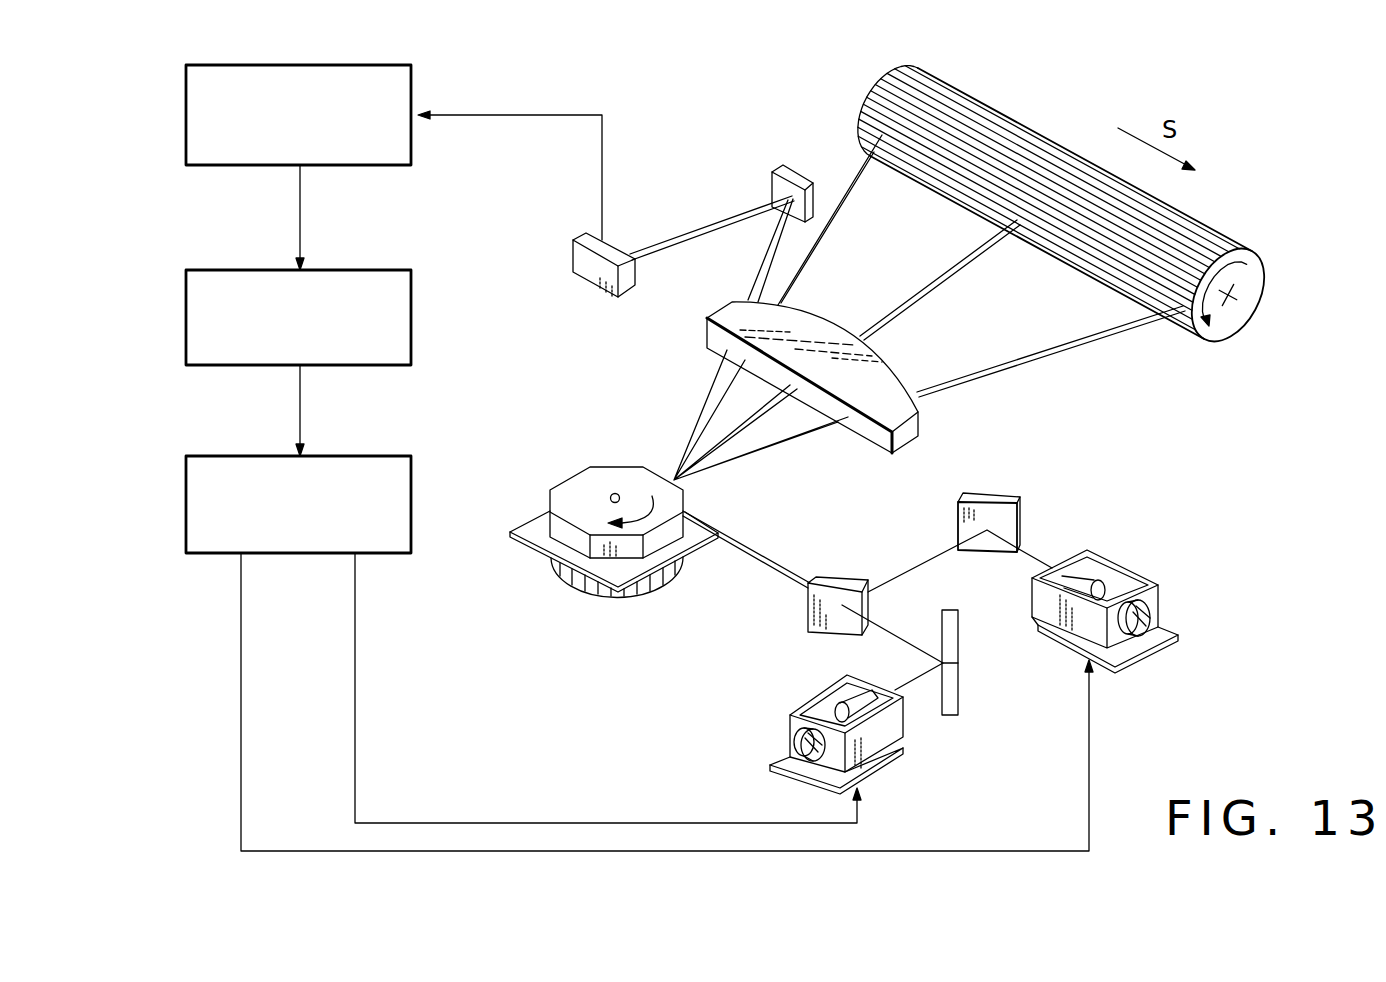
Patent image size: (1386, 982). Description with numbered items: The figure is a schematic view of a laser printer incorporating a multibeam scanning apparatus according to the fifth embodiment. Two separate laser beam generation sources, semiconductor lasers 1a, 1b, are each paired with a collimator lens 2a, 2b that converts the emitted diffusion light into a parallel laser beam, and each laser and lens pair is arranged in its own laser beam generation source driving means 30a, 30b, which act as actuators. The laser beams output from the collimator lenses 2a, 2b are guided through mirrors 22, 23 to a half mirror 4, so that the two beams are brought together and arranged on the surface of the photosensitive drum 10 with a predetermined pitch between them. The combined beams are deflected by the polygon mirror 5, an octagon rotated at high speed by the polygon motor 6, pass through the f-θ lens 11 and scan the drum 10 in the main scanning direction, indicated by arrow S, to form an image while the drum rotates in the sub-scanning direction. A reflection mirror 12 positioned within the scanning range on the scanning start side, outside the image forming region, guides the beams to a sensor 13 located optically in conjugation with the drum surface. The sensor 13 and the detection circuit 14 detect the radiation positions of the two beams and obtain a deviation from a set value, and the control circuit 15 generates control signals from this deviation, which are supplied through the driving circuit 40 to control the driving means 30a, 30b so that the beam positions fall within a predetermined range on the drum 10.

The detection circuit 14 is at (411, 83).
The control circuit 15 is at (411, 318).
The piezoelectric element driving circuit 40 is at (411, 520).
The photosensitive drum 10 is at (1228, 237).
The f-θ lens 11 is at (905, 434).
The reflection mirror 12 is at (778, 170).
The sensor 13 is at (578, 257).
The polygon mirror 5 is at (585, 484).
The polygon motor 6 is at (575, 575).
The half mirror 4 is at (808, 612).
The mirror 22 is at (1020, 525).
The mirror 23 is at (958, 680).
The collimator lens 2a is at (845, 705).
The semiconductor laser 1a is at (800, 742).
The laser beam generation source driving means 30a is at (890, 725).
The collimator lens 2b is at (1085, 580).
The semiconductor laser 1b is at (1150, 612).
The laser beam generation source driving means 30b is at (1163, 640).